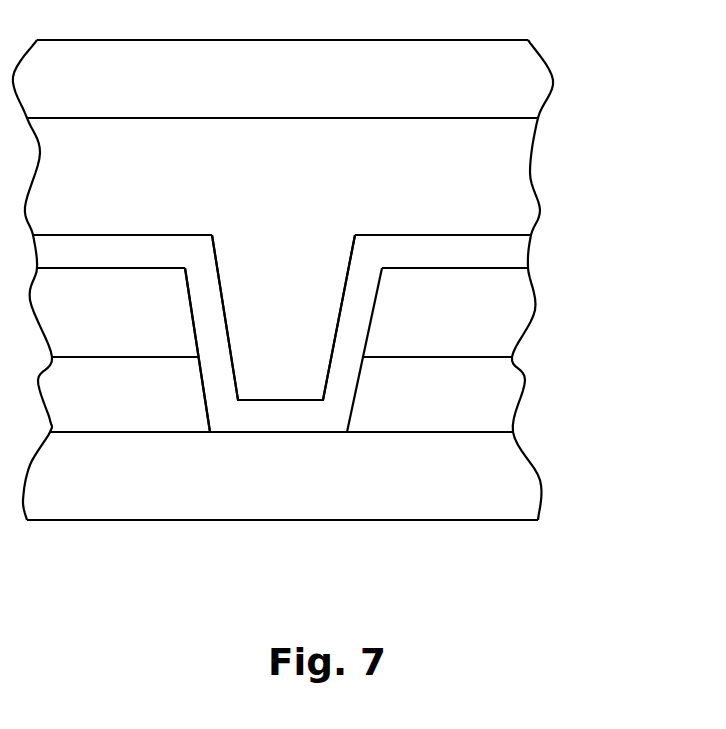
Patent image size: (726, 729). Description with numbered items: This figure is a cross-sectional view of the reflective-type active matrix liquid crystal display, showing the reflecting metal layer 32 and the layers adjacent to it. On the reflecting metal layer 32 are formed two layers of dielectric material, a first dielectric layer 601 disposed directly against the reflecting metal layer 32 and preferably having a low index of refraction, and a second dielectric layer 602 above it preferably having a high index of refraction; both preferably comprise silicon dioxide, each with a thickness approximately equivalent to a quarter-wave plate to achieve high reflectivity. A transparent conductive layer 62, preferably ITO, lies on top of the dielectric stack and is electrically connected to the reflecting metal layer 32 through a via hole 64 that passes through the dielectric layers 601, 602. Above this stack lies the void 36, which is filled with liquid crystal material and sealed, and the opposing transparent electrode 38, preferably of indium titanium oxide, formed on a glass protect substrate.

The transparent electrode 38 is at (339, 79).
The void 36 is at (339, 176).
The transparent conductive layer 62 is at (342, 333).
The second dielectric layer 602 is at (349, 312).
The first dielectric layer 601 is at (356, 394).
The reflecting metal layer 32 is at (339, 476).
The via hole 64 is at (215, 423).